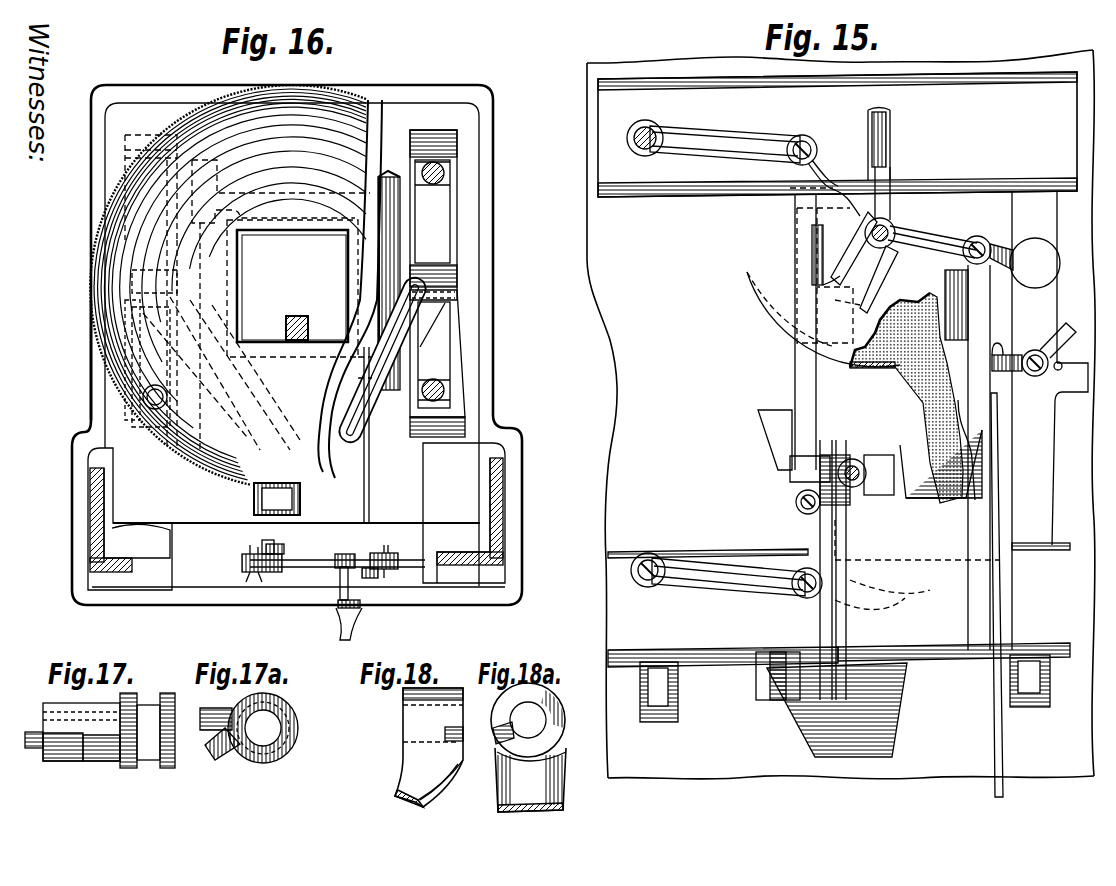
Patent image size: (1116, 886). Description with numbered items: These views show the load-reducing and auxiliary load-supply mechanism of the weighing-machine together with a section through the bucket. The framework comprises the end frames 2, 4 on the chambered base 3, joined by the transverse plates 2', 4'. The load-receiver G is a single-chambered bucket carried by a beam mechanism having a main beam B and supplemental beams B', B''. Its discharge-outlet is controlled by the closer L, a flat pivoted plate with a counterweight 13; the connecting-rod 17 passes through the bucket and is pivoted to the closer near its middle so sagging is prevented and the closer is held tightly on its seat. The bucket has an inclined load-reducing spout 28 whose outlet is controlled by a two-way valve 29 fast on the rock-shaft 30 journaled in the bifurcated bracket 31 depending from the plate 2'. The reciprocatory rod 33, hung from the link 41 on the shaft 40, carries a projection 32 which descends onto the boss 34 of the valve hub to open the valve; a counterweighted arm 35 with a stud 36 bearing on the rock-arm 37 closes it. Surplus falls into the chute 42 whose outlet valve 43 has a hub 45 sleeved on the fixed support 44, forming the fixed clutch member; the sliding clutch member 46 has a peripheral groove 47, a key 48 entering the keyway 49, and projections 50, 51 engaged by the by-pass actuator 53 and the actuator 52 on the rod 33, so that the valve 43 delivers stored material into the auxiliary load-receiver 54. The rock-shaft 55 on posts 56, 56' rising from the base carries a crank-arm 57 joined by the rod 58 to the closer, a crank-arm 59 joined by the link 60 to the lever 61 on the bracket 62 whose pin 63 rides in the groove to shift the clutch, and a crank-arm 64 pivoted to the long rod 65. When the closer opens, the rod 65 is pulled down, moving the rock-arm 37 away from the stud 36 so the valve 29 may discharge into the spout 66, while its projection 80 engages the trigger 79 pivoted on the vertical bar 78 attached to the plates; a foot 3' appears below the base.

In FIG. 16, the counterweight 13 is at (220, 184).
In FIG. 16, the main beam B is at (462, 215).
In FIG. 16, the supplemental beam B'' is at (458, 363).
In FIG. 16, the closer L is at (292, 286).
In FIG. 16, the connecting-rod 17 is at (290, 322).
In FIG. 16, the load-receiver G is at (128, 338).
In FIG. 16, the supplemental beam B' is at (101, 360).
In FIG. 16, the supporting-base 3 is at (77, 360).
In FIG. 16, the end frame 2 is at (108, 519).
In FIG. 16, the end frame 4 is at (483, 513).
In FIG. 16, the auxiliary load-receiver 54 is at (258, 494).
In FIG. 15, the auxiliary load-receiver 54 is at (882, 721).
In FIG. 16, the rod 58 is at (368, 462).
In FIG. 16, the rock-shaft 55 is at (337, 573).
In FIG. 16, the post 56 is at (245, 559).
In FIG. 16, the post 56' is at (398, 557).
In FIG. 16, the crank-arm 59 is at (268, 548).
In FIG. 16, the link 60 is at (278, 549).
In FIG. 16, the crank-arm 57 is at (372, 578).
In FIG. 16, the crank-arm 64 is at (340, 588).
In FIG. 16, the rod 65 is at (348, 606).
In FIG. 15, the rod 65 is at (980, 322).
In FIG. 16, the bracket foot 3' is at (342, 632).
In FIG. 15, the transverse plate 2' is at (837, 134).
In FIG. 15, the shaft 40 is at (652, 133).
In FIG. 15, the link 41 is at (730, 132).
In FIG. 15, the bifurcated bracket 31 is at (895, 165).
In FIG. 15, the rock-shaft 30 is at (890, 222).
In FIG. 15, the projection 32 is at (836, 186).
In FIG. 15, the boss 34 is at (844, 248).
In FIG. 15, the rock-arm 37 is at (918, 283).
In FIG. 15, the stud 36 is at (960, 238).
In FIG. 15, the counterweighted arm 35 is at (1003, 250).
In FIG. 15, the vertical bar 78 is at (1048, 442).
In FIG. 15, the projection 80 is at (1000, 352).
In FIG. 15, the trigger 79 is at (1046, 354).
In FIG. 15, the reciprocatory rod 33 is at (800, 356).
In FIG. 15, the valve 29 is at (778, 306).
In FIG. 15, the spout 28 is at (884, 300).
In FIG. 15, the projection 50 is at (818, 432).
In FIG. 17, the projection 50 is at (88, 722).
In FIG. 17A, the projection 50 is at (222, 714).
In FIG. 15, the chute 42 is at (776, 430).
In FIG. 15, the by-pass actuator 53 is at (796, 470).
In FIG. 15, the actuator 52 is at (812, 514).
In FIG. 15, the transverse plate 4' is at (839, 632).
In FIG. 15, the lever 61 is at (835, 618).
In FIG. 15, the valve 43 is at (912, 590).
In FIG. 15, the fixed support 44 is at (852, 460).
In FIG. 15, the pin 63 is at (836, 462).
In FIG. 15, the spout 66 is at (967, 510).
In FIG. 15, the bracket 62 is at (785, 660).
In FIG. 17, the peripheral groove 47 is at (150, 758).
In FIG. 17, the sliding clutch member 46 is at (107, 762).
In FIG. 17A, the sliding clutch member 46 is at (265, 762).
In FIG. 17, the projection 51 is at (64, 762).
In FIG. 17A, the projection 51 is at (214, 755).
In FIG. 17, the key 48 is at (34, 748).
In FIG. 18, the valve-hub 45 is at (410, 714).
In FIG. 18A, the valve-hub 45 is at (549, 716).
In FIG. 18, the keyway 49 is at (462, 745).